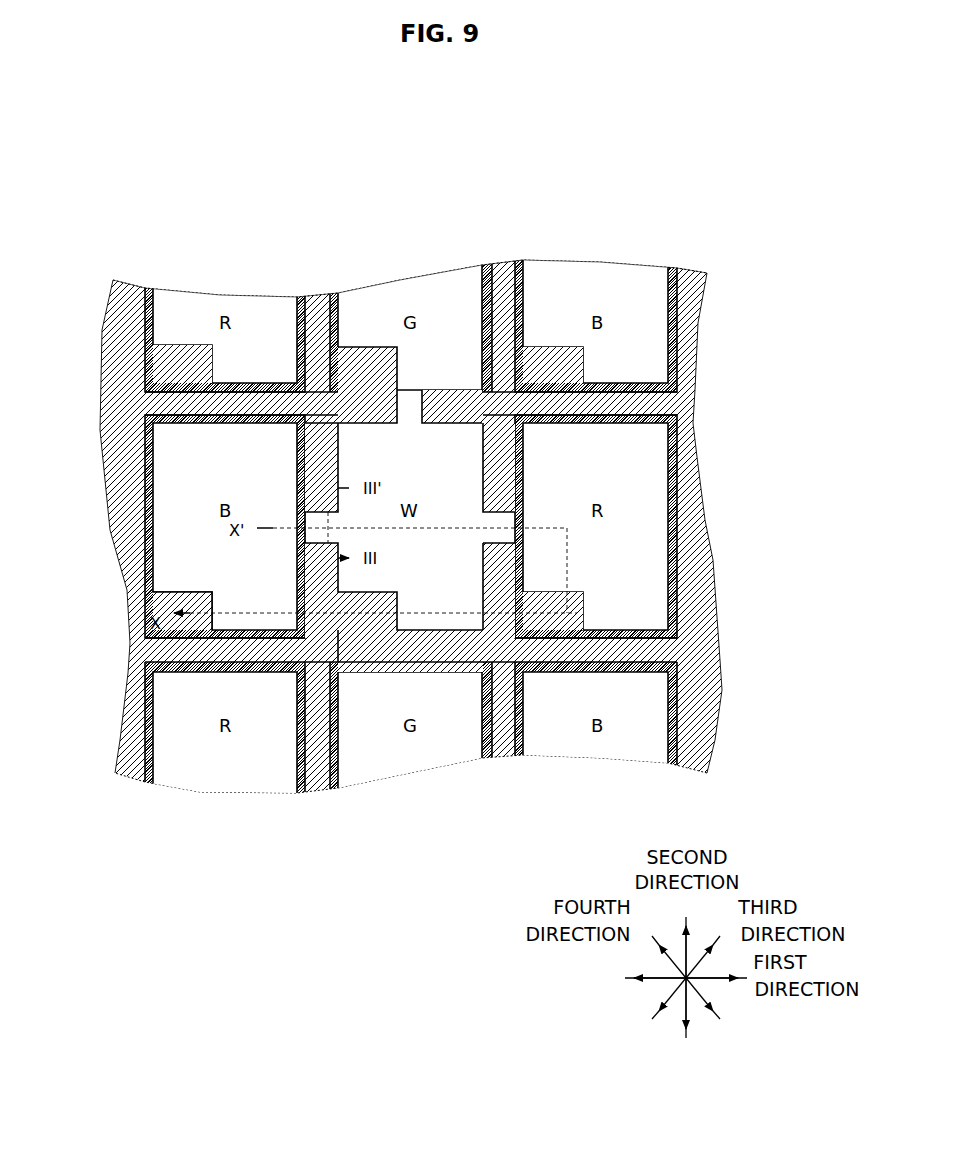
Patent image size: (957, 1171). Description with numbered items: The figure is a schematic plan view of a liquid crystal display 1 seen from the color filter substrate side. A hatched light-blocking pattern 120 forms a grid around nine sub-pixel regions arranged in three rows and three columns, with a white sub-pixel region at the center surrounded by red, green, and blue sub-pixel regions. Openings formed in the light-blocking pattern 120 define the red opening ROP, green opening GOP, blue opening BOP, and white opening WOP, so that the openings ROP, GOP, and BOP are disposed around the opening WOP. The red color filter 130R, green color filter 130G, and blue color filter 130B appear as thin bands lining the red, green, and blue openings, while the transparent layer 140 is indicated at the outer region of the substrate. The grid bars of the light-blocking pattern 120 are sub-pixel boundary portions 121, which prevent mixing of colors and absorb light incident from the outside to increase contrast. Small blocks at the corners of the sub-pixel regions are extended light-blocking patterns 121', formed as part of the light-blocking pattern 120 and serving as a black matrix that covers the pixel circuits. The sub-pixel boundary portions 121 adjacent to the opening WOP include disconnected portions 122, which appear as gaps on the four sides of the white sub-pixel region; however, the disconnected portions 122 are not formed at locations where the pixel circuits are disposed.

The liquid crystal display 1 is at (740, 246).
The light-blocking pattern 120 is at (697, 310).
The sub-pixel boundary portions 121 is at (361, 502).
The extended light-blocking patterns 121' is at (126, 601).
The disconnected portions 122 is at (410, 407).
The red color filter 130R is at (147, 300).
The green color filter 130G is at (320, 297).
The blue color filter 130B is at (518, 298).
The transparent layer 140 is at (720, 648).
The red opening ROP is at (297, 310).
The green opening GOP is at (487, 300).
The blue opening BOP is at (667, 298).
The white opening WOP is at (473, 563).